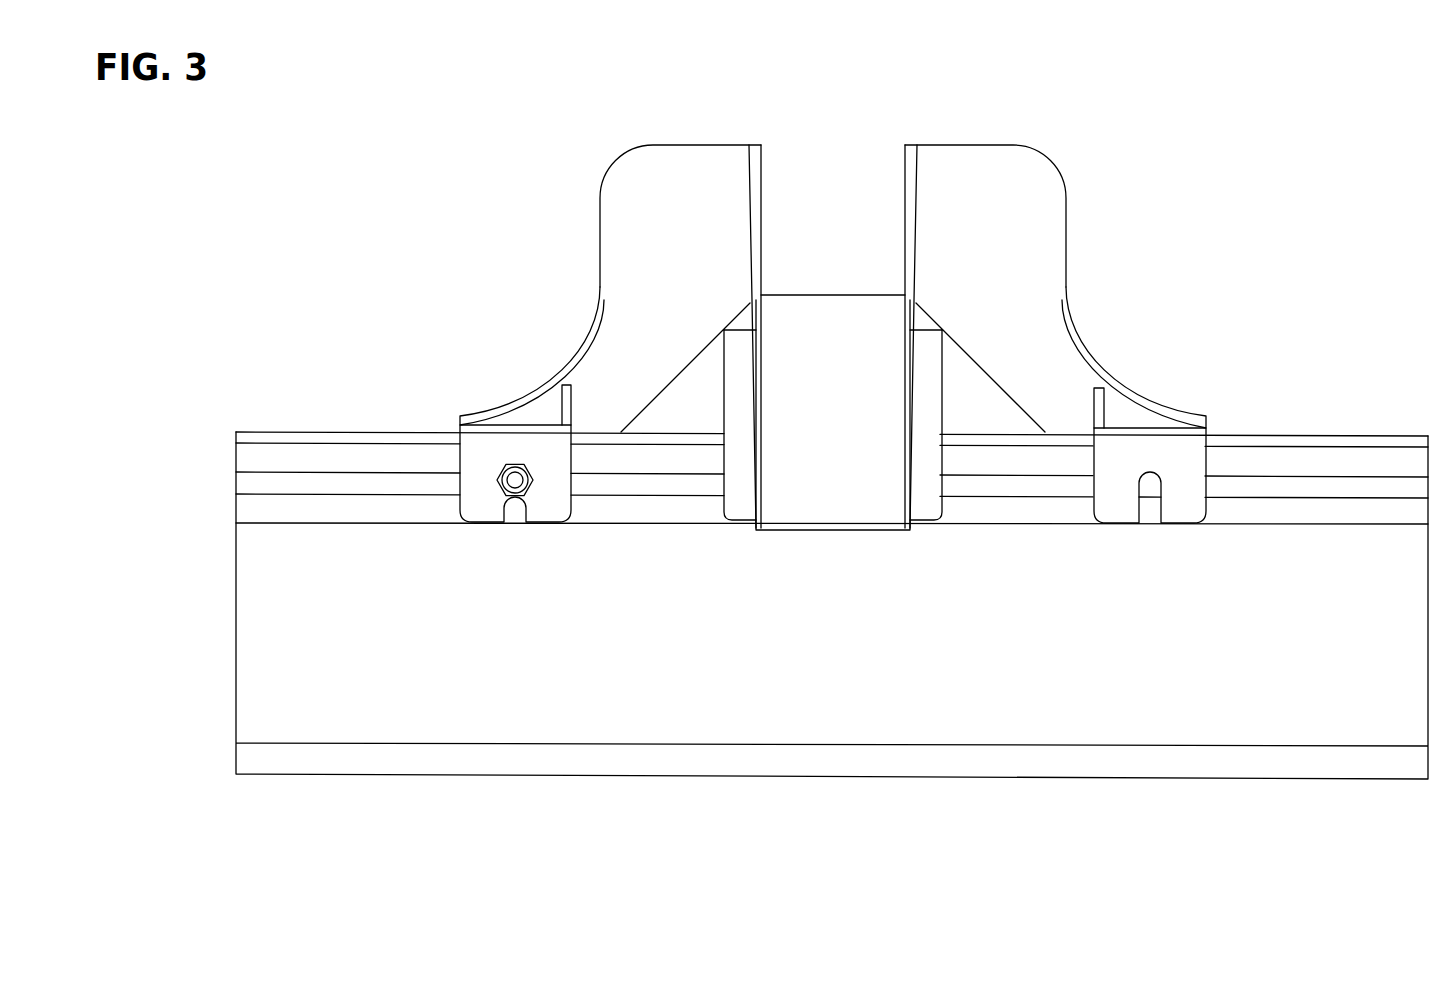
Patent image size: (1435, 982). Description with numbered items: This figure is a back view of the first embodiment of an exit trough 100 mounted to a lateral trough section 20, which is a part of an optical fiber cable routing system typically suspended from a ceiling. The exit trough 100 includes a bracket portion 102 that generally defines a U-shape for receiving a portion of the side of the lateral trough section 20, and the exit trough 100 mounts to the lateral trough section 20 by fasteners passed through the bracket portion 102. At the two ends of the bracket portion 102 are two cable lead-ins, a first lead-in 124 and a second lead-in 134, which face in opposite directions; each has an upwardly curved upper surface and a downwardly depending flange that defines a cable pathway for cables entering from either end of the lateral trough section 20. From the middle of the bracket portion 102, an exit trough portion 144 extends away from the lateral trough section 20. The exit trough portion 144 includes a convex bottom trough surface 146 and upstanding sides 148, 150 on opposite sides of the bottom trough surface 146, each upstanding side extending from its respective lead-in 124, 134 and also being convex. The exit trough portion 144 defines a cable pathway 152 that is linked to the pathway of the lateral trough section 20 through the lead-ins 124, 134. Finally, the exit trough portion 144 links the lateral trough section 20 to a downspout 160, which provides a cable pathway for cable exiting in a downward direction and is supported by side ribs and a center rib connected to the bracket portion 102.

The lateral trough section 20 is at (679, 776).
The exit trough 100 is at (825, 365).
The bracket portion 102 is at (852, 454).
The first lead-in 124 is at (1110, 386).
The second lead-in 134 is at (546, 376).
The exit trough portion 144 is at (1074, 316).
The bottom trough surface 146 is at (831, 294).
The upstanding side 148 is at (906, 180).
The upstanding side 150 is at (764, 193).
The cable pathway 152 is at (880, 261).
The downspout 160 is at (823, 531).